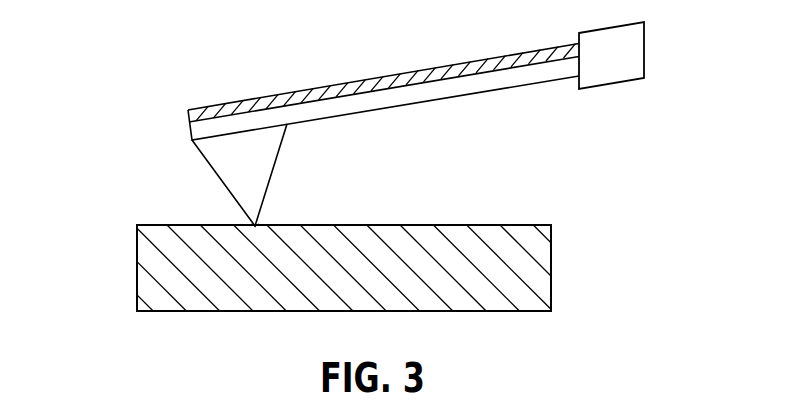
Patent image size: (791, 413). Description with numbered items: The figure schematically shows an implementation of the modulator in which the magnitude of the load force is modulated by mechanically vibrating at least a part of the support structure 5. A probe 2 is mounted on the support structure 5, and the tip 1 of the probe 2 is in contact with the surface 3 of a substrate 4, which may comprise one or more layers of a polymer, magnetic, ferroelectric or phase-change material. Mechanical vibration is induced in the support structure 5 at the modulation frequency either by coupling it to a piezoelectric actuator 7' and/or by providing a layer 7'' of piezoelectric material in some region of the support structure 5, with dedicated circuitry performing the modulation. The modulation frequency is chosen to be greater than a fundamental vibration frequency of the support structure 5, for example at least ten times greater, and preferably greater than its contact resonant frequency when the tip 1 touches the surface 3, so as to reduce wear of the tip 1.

The tip 1 is at (257, 227).
The probe 2 is at (240, 185).
The surface 3 is at (520, 224).
The substrate 4 is at (145, 274).
The support structure 5 is at (190, 131).
The layer of piezoelectric material 7'' is at (383, 62).
The piezoelectric actuator 7' is at (667, 55).